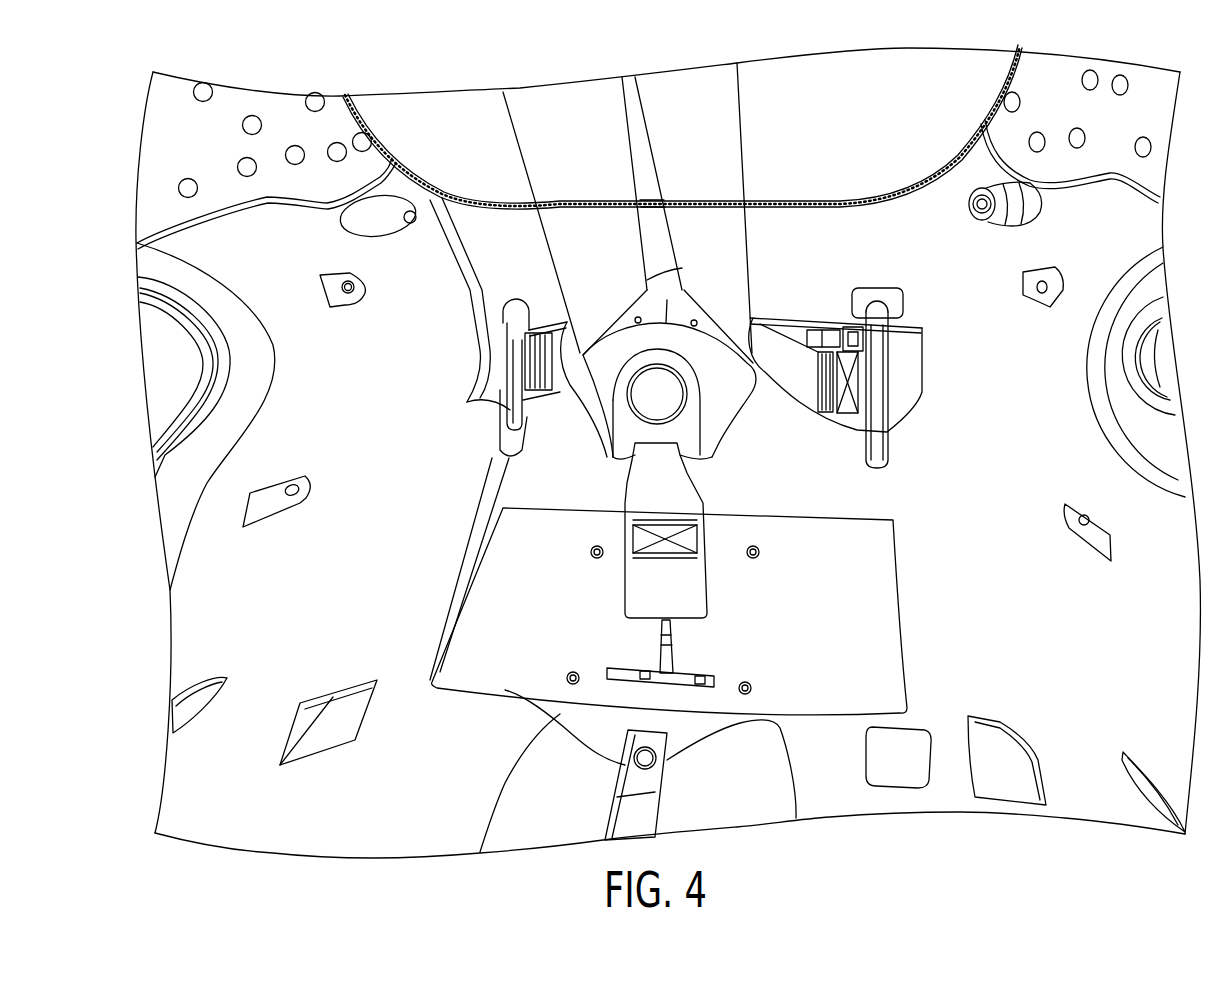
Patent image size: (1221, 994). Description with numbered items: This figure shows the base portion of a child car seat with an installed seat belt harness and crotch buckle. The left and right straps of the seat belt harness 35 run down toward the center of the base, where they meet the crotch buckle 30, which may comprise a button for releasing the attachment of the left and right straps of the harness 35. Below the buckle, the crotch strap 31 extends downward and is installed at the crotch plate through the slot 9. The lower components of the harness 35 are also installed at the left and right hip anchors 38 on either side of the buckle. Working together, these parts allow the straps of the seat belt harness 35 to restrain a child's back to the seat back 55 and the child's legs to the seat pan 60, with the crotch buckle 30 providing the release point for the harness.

The seat back 55 is at (447, 130).
The seat belt harness 35 is at (567, 250).
The crotch buckle 30 is at (610, 400).
The hip anchors 38 is at (895, 432).
The crotch strap 31 is at (640, 492).
The slot 9 is at (650, 622).
The seat pan 60 is at (840, 682).